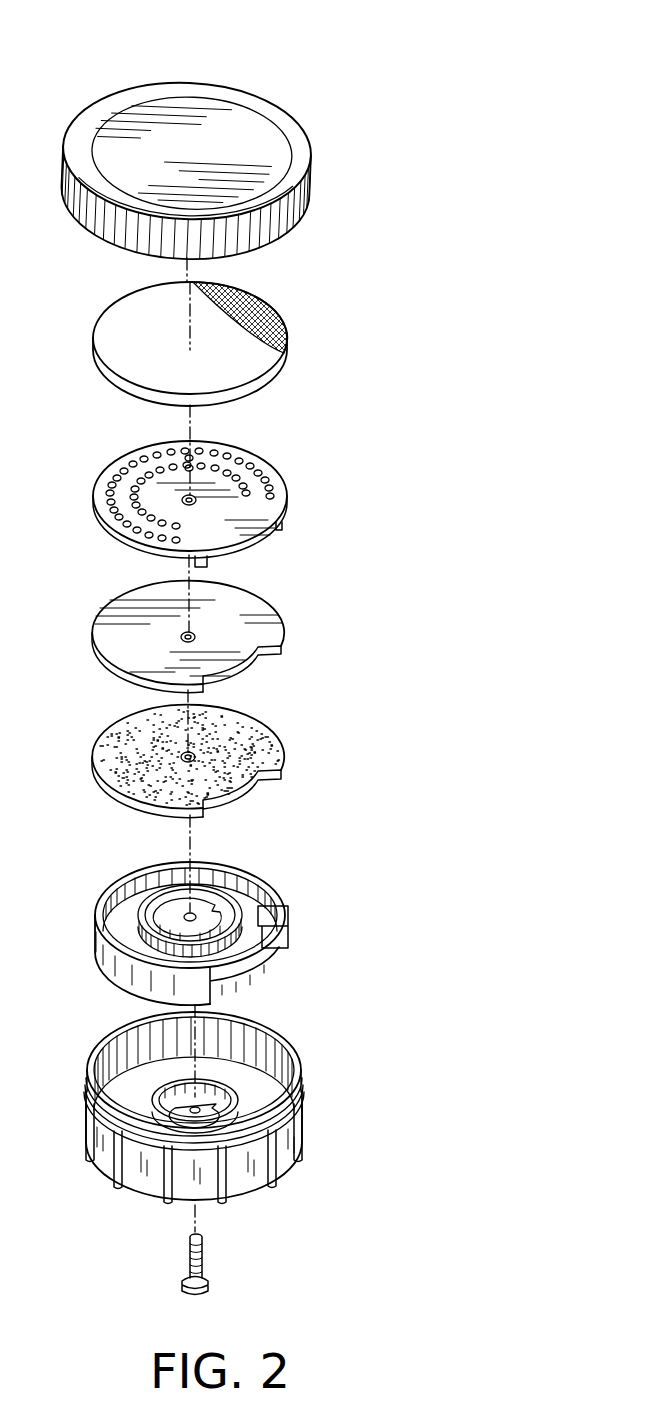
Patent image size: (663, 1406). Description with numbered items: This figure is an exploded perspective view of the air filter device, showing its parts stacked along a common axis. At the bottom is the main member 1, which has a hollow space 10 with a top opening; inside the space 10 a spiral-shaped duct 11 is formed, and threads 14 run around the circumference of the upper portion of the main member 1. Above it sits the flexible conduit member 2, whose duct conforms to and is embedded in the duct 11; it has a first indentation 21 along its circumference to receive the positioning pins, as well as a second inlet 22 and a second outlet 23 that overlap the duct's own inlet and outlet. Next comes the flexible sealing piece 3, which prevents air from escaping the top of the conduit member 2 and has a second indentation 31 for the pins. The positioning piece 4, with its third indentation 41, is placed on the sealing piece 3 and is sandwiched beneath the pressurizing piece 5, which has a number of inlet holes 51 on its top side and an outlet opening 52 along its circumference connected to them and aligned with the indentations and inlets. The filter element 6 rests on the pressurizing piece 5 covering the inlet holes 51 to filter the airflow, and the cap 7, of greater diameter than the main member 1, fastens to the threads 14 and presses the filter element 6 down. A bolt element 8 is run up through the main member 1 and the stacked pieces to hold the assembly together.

The main member 1 is at (209, 1111).
The hollow space 10 is at (247, 1070).
The duct 11 is at (167, 1087).
The threads 14 is at (117, 1147).
The conduit member 2 is at (212, 903).
The first indentation 21 is at (280, 918).
The second inlet 22 is at (220, 984).
The second outlet 23 is at (180, 880).
The sealing piece 3 is at (226, 761).
The second indentation 31 is at (253, 787).
The positioning piece 4 is at (223, 615).
The third indentation 41 is at (257, 663).
The pressurizing piece 5 is at (206, 476).
The inlet holes 51 is at (113, 470).
The outlet opening 52 is at (257, 548).
The filter element 6 is at (282, 310).
The cap 7 is at (290, 115).
The bolt element 8 is at (205, 1265).